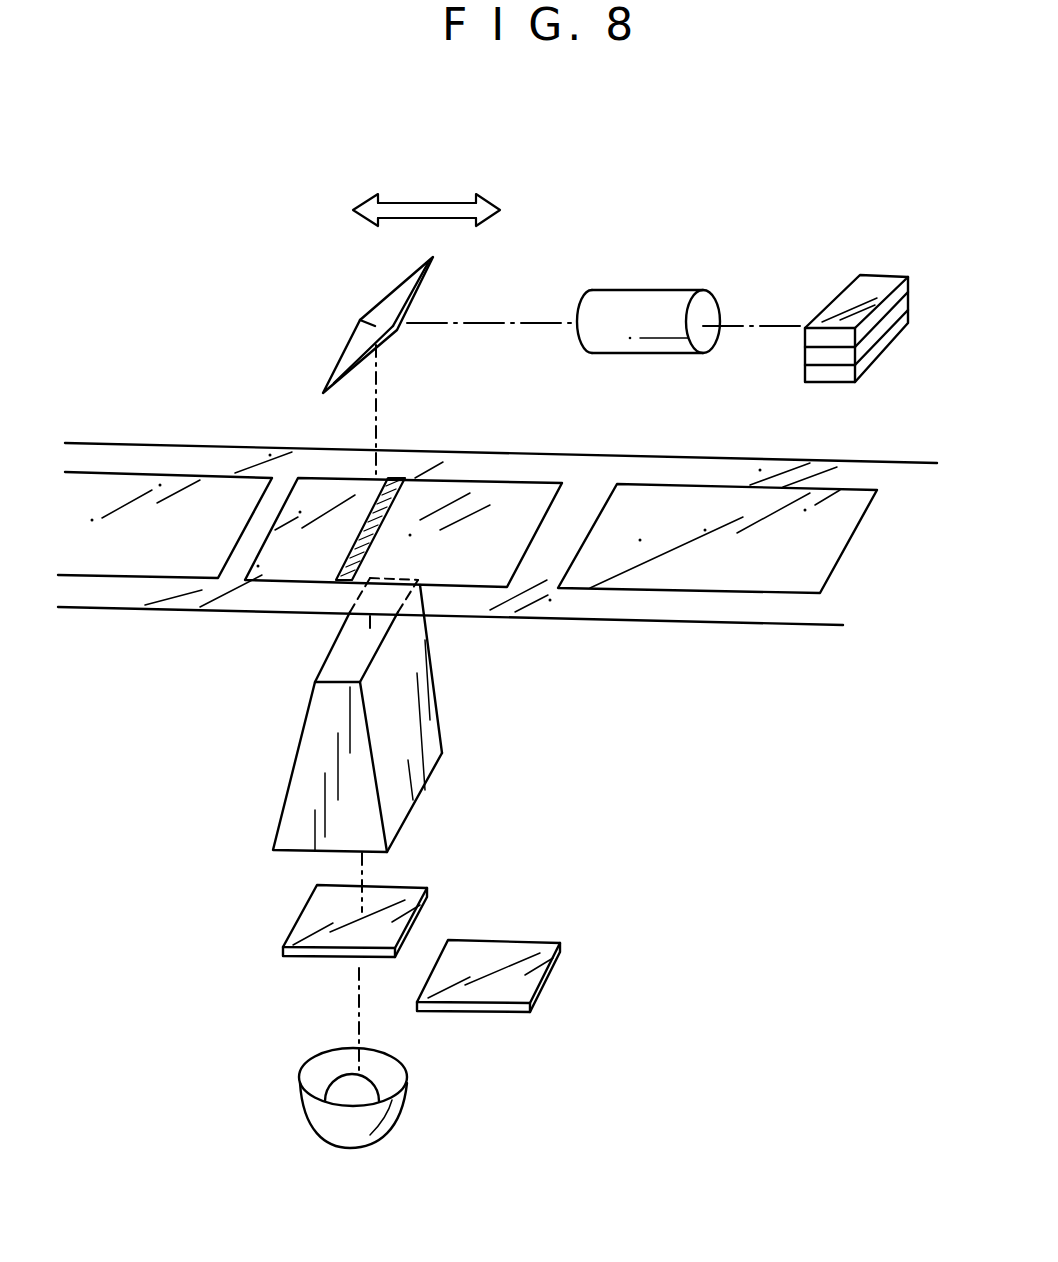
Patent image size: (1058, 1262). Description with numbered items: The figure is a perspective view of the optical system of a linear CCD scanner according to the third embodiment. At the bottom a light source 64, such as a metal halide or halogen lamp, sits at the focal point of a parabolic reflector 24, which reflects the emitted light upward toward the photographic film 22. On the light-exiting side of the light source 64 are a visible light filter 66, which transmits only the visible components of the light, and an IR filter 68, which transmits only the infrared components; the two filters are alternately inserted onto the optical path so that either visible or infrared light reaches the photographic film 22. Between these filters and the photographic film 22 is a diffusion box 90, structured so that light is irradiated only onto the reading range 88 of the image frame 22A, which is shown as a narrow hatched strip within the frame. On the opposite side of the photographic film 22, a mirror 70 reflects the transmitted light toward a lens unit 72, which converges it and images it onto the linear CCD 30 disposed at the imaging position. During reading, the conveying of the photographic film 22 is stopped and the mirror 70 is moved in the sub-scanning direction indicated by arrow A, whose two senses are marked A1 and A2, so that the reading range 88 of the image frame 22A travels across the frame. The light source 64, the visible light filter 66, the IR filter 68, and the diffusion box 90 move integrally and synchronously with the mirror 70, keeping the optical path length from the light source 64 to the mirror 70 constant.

The arrow A is at (420, 206).
The first direction A1 is at (342, 209).
The second direction A2 is at (513, 209).
The mirror 70 is at (370, 328).
The lens unit 72 is at (645, 308).
The linear CCD 30 is at (850, 293).
The photographic film 22 is at (597, 468).
The image frame 22A is at (493, 470).
The reading range 88 is at (342, 563).
The diffusion box 90 is at (422, 716).
The visible light filter 66 is at (313, 920).
The IR filter 68 is at (513, 978).
The light source 64 is at (363, 1087).
The parabolic reflector 24 is at (358, 1137).